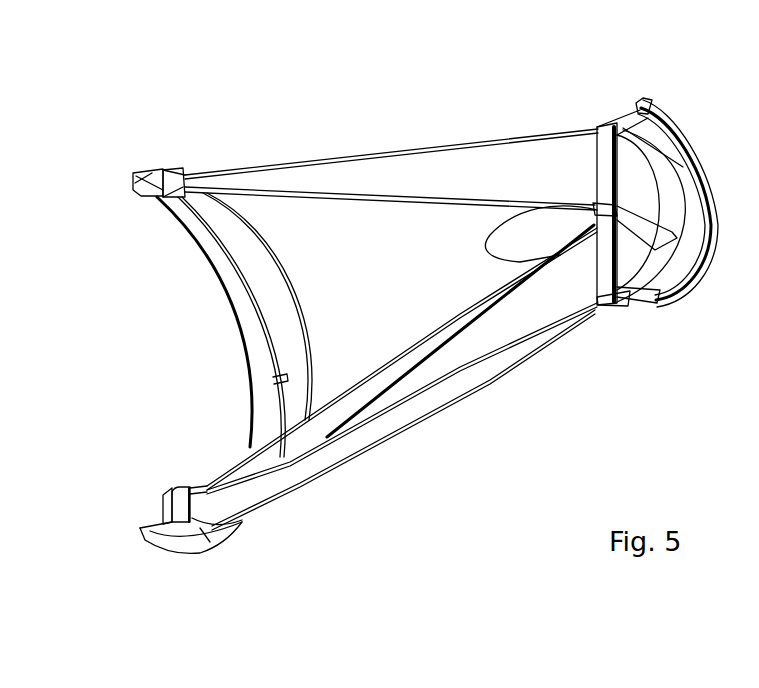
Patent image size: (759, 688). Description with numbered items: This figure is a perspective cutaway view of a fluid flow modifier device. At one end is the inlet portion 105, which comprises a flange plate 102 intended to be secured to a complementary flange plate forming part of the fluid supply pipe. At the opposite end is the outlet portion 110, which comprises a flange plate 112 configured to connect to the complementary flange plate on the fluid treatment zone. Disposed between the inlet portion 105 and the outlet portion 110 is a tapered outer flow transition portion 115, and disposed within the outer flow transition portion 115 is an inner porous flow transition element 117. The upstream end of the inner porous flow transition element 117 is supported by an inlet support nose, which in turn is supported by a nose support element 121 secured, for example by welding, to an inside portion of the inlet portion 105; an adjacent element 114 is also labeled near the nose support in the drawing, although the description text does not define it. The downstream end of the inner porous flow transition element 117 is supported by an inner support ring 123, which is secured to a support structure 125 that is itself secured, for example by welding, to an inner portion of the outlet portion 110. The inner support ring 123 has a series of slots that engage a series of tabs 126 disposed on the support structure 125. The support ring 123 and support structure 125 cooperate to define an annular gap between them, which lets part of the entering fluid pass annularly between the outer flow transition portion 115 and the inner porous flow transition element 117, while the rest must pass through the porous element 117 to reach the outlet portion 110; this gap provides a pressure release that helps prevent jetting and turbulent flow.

The flange plate 102 is at (670, 114).
The inlet portion 105 is at (646, 82).
The outlet portion 110 is at (186, 133).
The flange plate 112 is at (140, 178).
The web 114 is at (563, 217).
The tapered outer flow transition portion 115 is at (394, 152).
The inner porous flow transition element 117 is at (468, 200).
The nose support element 121 is at (603, 292).
The inner support ring 123 is at (267, 275).
The support structure 125 is at (203, 532).
The tabs 126 is at (163, 194).